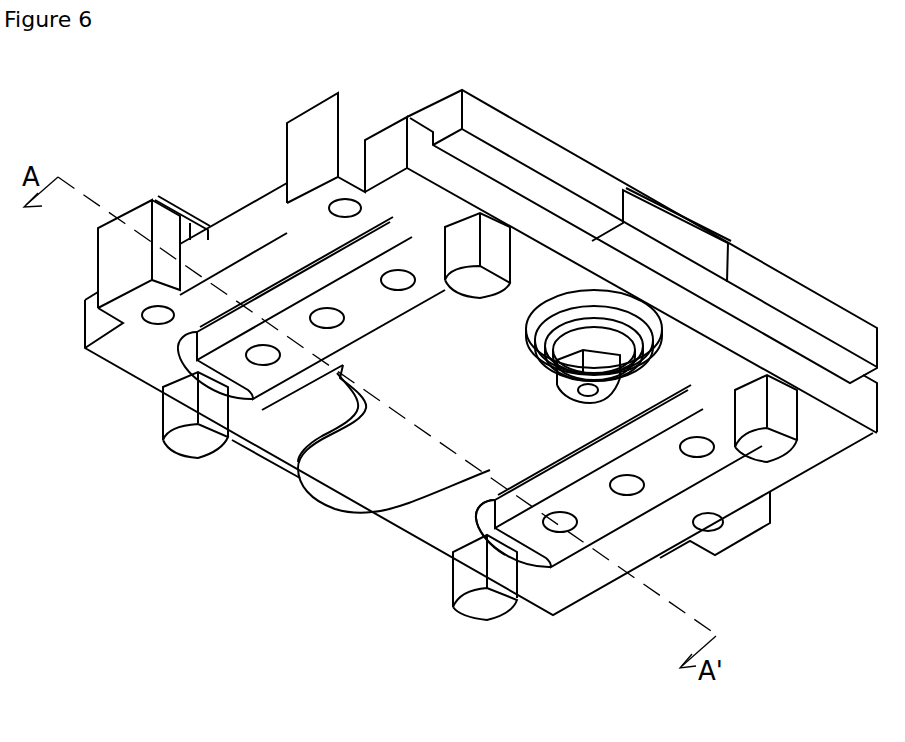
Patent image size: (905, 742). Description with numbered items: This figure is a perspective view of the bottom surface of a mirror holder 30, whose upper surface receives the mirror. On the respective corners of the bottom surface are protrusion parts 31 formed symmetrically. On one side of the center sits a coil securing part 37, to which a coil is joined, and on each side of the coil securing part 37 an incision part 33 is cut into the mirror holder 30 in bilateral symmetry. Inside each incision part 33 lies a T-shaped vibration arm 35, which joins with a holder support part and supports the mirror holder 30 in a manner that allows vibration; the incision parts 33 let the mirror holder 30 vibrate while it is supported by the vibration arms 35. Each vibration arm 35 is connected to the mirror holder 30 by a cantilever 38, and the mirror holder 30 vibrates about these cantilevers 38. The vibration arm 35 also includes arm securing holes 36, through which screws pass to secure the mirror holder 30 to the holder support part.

The mirror holder 30 is at (762, 170).
The protrusion parts 31 is at (195, 445).
The incision parts 33 is at (290, 378).
The vibration arm 35 is at (543, 540).
The arm securing holes 36 is at (392, 278).
The coil securing part 37 is at (590, 387).
The cantilever 38 is at (540, 466).